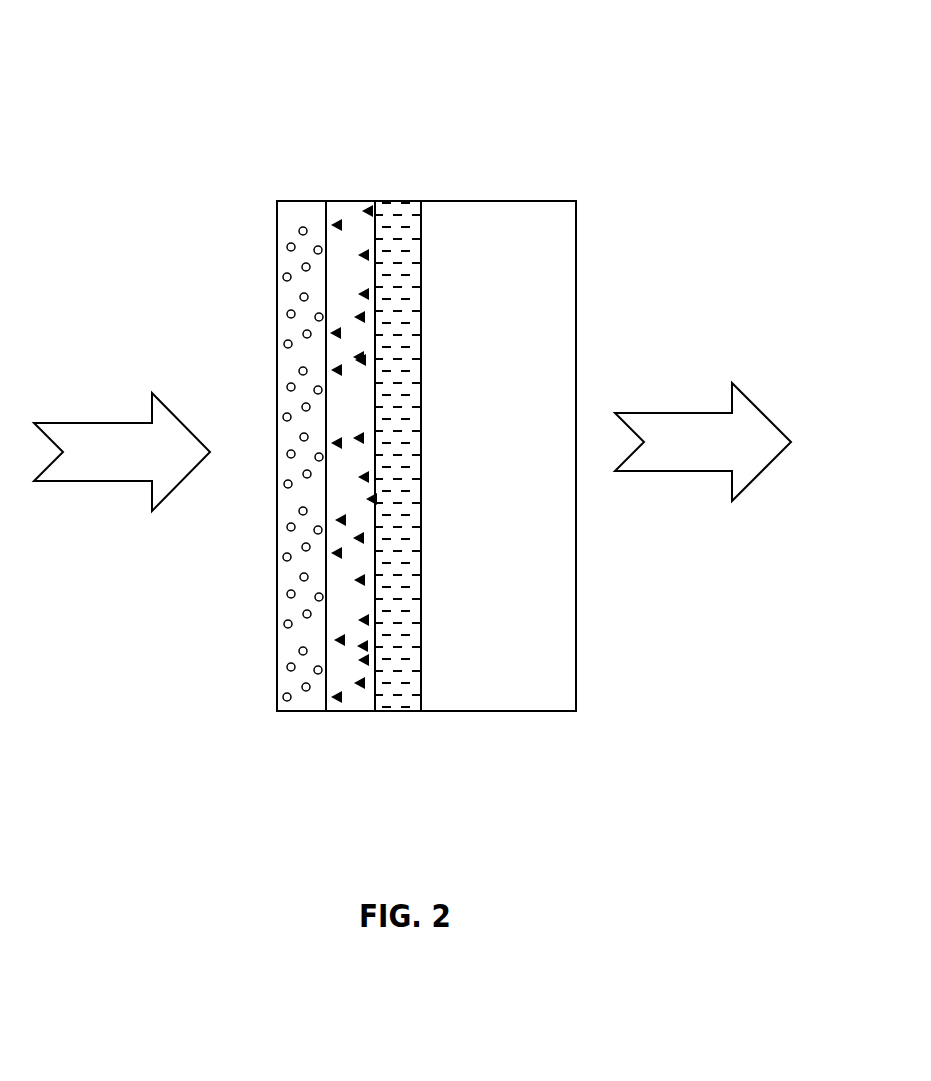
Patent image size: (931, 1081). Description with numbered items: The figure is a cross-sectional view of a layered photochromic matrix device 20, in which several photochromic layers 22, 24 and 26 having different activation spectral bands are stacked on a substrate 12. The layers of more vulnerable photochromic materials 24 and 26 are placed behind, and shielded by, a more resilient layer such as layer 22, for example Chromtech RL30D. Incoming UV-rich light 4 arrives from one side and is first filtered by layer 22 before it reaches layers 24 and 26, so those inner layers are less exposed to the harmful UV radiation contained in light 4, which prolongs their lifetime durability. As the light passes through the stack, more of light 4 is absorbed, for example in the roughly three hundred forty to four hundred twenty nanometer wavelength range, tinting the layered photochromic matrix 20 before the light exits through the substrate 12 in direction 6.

The device 20 is at (541, 86).
The photochromic layer 22 is at (301, 702).
The photochromic layer 24 is at (352, 702).
The photochromic layer 26 is at (402, 703).
The substrate 12 is at (490, 702).
The UV-rich light 4 is at (122, 452).
The direction 6 is at (703, 442).